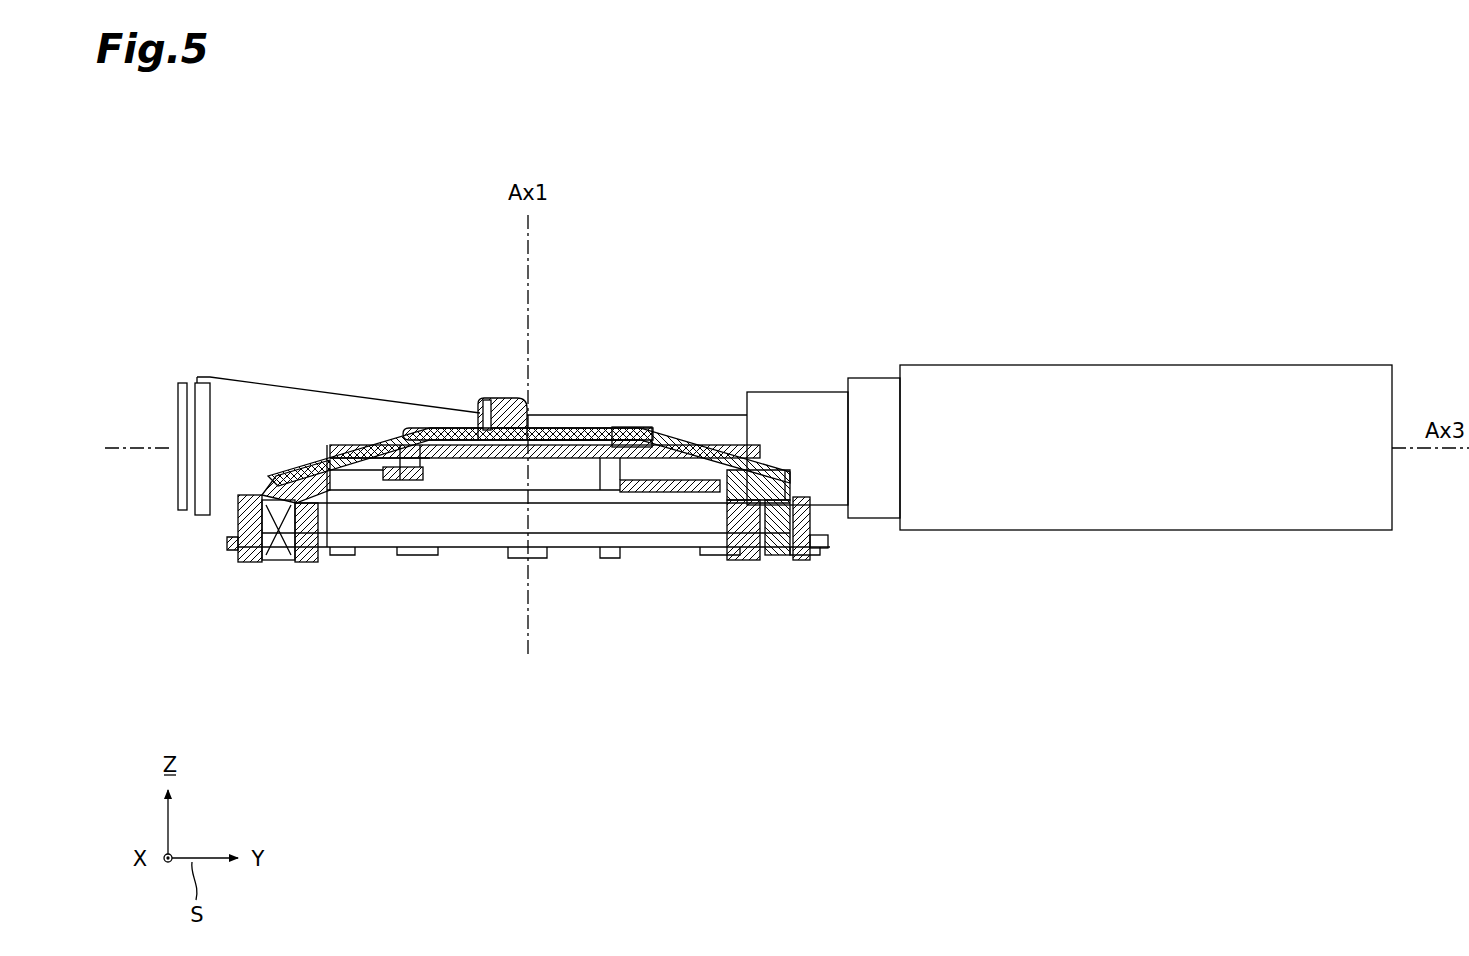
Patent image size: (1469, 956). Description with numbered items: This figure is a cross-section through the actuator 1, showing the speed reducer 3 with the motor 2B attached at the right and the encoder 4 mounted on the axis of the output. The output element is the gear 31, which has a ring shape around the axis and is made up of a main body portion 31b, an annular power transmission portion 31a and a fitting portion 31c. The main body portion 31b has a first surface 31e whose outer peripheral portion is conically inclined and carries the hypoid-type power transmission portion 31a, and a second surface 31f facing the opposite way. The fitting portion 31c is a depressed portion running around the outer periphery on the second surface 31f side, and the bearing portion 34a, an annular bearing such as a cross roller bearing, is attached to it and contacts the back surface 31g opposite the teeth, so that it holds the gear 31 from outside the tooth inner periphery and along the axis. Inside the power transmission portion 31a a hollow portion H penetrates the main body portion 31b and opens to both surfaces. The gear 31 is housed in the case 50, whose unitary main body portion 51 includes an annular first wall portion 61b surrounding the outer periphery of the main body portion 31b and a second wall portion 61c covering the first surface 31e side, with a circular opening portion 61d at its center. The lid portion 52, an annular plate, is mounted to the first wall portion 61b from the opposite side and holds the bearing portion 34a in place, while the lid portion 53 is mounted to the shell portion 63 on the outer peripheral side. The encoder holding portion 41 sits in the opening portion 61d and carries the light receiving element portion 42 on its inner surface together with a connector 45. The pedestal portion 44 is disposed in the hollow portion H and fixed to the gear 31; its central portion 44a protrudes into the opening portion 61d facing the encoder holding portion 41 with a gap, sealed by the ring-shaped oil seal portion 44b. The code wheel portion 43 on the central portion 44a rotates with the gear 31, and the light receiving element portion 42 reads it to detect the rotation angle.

The actuator 1 is at (254, 212).
The motor 2B is at (1203, 362).
The speed reducer 3 is at (749, 670).
The encoder 4 is at (637, 412).
The gear 31 is at (336, 442).
The power transmission portion 31a is at (303, 462).
The main body portion 31b is at (240, 513).
The fitting portion 31c is at (278, 455).
The first surface 31e is at (286, 472).
The second surface 31f is at (345, 405).
The back surface 31g is at (815, 527).
The bearing portion 34a is at (797, 557).
The encoder holding portion 41 is at (560, 413).
The light receiving element portion 42 is at (448, 417).
The code wheel portion 43 is at (467, 413).
The pedestal portion 44 is at (375, 497).
The central portion 44a is at (477, 458).
The oil seal portion 44b is at (612, 460).
The connector 45 is at (545, 413).
The case 50 is at (215, 384).
The main body portion 51 is at (250, 400).
The lid portion 52 is at (227, 540).
The lid portion 53 is at (178, 410).
The first wall portion 61b is at (802, 487).
The second wall portion 61c is at (698, 445).
The opening portion 61d is at (610, 415).
The shell portion 63 is at (262, 398).
The hollow portion H is at (504, 494).